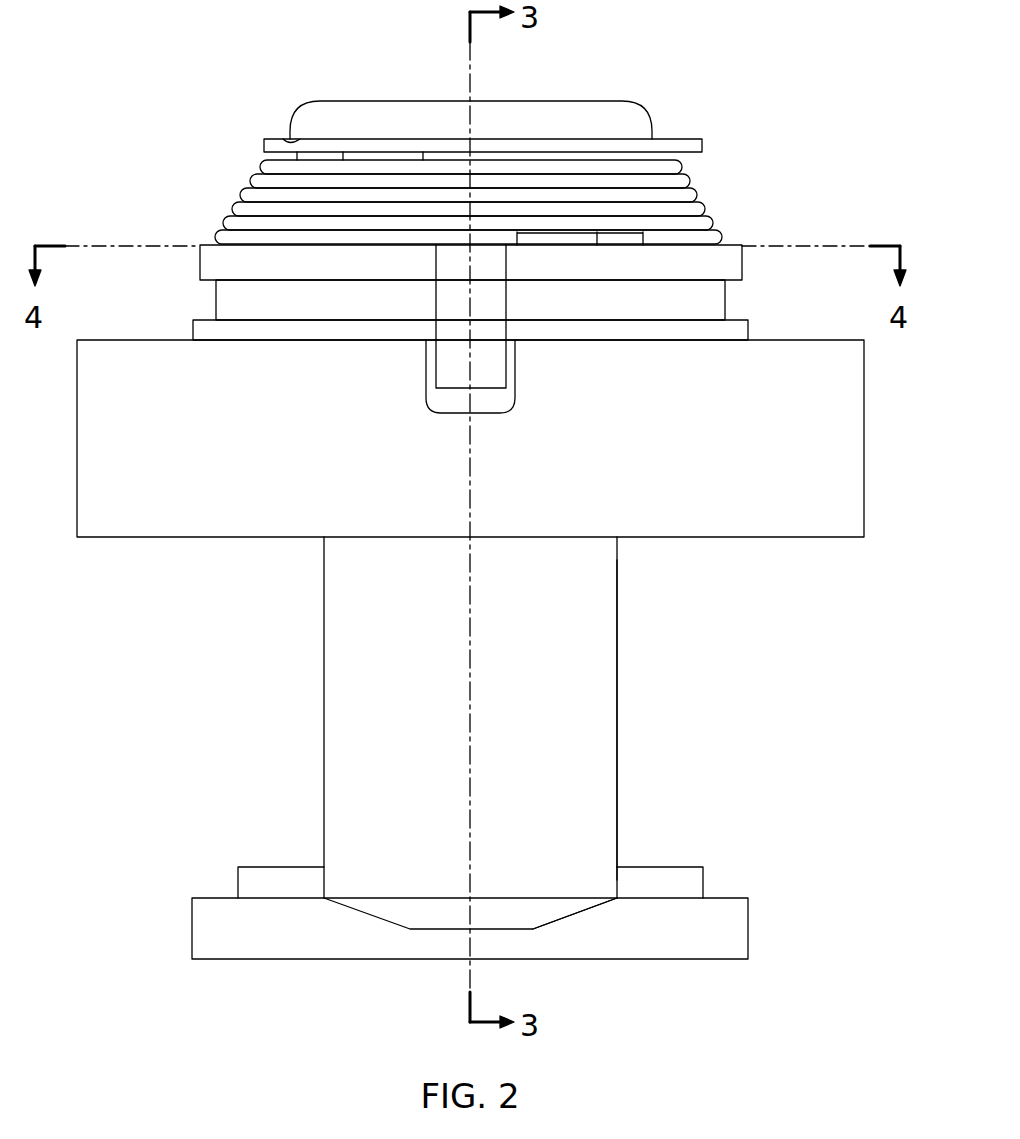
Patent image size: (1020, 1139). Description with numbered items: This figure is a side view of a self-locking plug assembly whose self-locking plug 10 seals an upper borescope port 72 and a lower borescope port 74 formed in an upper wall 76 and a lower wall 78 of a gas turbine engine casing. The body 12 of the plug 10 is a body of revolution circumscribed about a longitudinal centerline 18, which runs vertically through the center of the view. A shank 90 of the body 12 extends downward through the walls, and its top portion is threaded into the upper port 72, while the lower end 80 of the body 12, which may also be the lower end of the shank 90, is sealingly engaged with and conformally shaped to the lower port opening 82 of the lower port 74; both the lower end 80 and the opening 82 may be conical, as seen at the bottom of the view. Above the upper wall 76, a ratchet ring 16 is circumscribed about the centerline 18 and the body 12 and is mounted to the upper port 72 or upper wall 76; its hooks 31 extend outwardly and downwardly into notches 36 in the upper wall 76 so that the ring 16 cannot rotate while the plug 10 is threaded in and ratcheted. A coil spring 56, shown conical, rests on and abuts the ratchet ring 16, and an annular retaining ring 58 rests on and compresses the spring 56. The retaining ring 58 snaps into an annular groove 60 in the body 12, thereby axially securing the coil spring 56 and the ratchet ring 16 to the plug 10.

The self-locking plug 10 is at (617, 605).
The body 12 is at (587, 101).
The ratchet ring 16 is at (742, 262).
The longitudinal centerline 18 is at (470, 680).
The hooks 31 is at (508, 362).
The notches 36 is at (500, 402).
The coil spring 56 is at (705, 202).
The annular retaining ring 58 is at (678, 135).
The annular groove 60 is at (293, 140).
The upper borescope port 72 is at (748, 332).
The lower borescope port 74 is at (703, 880).
The upper wall 76 is at (864, 443).
The lower wall 78 is at (748, 930).
The lower end 80 is at (393, 912).
The lower port opening 82 is at (570, 913).
The shank 90 is at (617, 662).